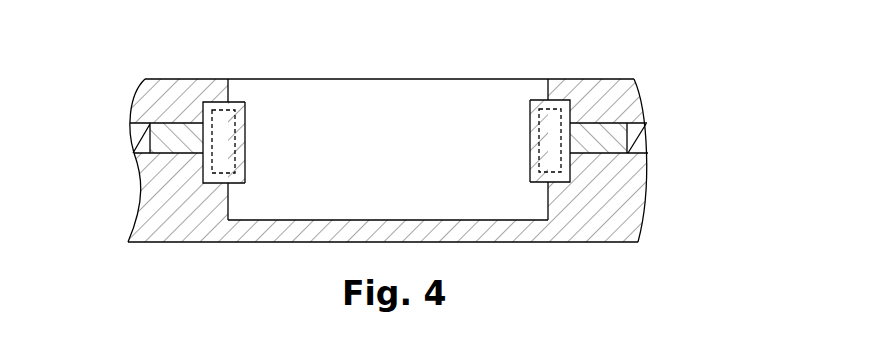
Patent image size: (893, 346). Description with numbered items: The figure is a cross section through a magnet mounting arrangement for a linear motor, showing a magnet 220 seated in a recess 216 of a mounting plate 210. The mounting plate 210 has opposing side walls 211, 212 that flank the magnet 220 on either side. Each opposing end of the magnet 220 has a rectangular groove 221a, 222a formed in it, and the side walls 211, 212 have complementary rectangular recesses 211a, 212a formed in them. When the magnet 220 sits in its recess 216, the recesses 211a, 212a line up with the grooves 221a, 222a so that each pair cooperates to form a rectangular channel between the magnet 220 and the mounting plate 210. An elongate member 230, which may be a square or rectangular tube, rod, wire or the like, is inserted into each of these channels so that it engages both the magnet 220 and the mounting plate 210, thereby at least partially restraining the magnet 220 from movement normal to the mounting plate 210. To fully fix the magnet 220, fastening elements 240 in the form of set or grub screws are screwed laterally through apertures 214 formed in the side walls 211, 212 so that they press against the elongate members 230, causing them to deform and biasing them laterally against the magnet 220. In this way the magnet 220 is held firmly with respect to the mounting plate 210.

The mounting plate 210 is at (592, 102).
The side wall 211 is at (612, 190).
The rectangular recess 211a is at (570, 172).
The side wall 212 is at (160, 108).
The rectangular recess 212a is at (200, 184).
The aperture 214 is at (142, 133).
The recess 216 is at (437, 220).
The magnet 220 is at (413, 155).
The rectangular groove 221a is at (530, 140).
The rectangular groove 222a is at (245, 132).
The elongate member 230 is at (225, 138).
The fastening element 240 is at (137, 153).